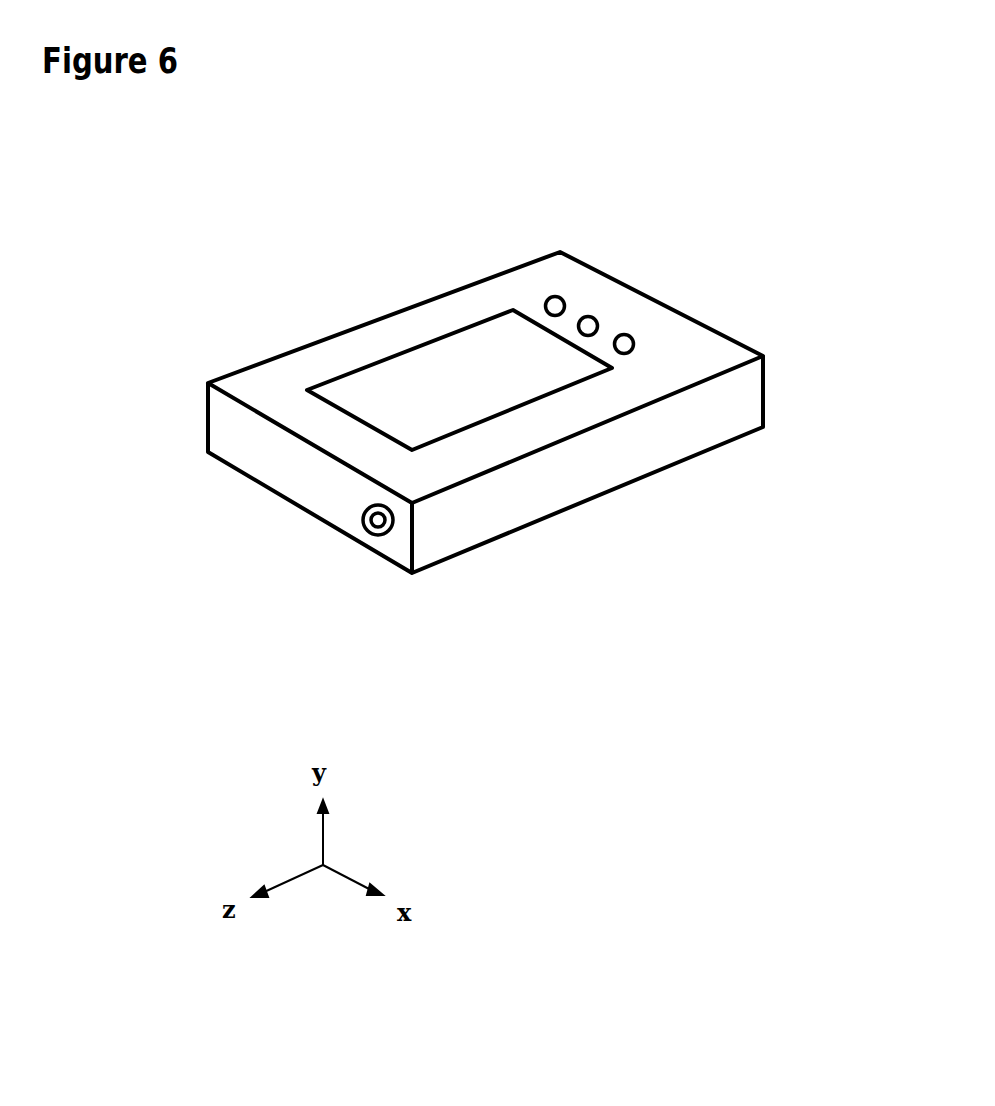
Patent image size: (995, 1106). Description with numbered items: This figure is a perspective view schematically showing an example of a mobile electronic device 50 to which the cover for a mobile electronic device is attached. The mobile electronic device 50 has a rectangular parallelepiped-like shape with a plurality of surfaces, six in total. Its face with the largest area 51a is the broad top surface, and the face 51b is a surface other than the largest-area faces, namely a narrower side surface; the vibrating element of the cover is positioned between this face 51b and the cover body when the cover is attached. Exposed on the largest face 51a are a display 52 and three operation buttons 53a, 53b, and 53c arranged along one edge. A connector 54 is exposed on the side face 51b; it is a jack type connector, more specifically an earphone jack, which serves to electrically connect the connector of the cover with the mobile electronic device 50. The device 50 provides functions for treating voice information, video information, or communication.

The mobile electronic device 50 is at (491, 435).
The face with the largest area 51a is at (472, 353).
The face 51b is at (442, 464).
The display 52 is at (452, 311).
The operation button 53a is at (738, 289).
The operation button 53b is at (689, 262).
The operation button 53c is at (644, 237).
The connector 54 is at (333, 587).